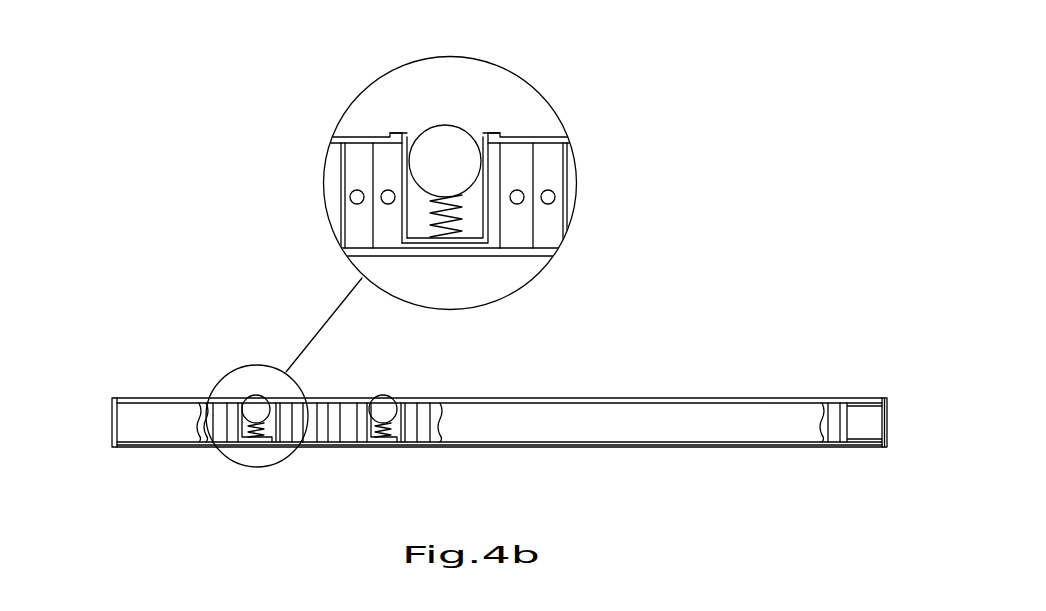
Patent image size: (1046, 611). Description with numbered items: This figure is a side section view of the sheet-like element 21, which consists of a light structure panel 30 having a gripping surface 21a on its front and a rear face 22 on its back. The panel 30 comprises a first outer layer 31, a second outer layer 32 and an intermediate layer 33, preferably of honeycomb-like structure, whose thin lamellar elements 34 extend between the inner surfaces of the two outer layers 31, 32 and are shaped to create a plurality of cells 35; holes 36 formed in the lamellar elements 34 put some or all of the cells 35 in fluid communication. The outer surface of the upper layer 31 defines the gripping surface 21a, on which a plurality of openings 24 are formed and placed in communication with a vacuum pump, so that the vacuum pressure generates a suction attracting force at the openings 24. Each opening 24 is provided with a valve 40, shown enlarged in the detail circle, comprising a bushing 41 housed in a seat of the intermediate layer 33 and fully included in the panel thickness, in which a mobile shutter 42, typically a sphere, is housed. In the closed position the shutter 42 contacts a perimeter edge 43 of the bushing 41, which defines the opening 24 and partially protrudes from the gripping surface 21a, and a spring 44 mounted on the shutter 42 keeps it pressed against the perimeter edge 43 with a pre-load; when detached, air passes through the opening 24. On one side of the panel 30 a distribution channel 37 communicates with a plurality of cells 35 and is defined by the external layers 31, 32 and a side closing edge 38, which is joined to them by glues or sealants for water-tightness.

The sheet-like element 21 is at (116, 320).
The gripping surface 21a is at (768, 388).
The rear face 22 is at (178, 458).
The opening 24 is at (410, 125).
The light structure panel 30 is at (671, 458).
The first outer layer 31 is at (350, 140).
The second outer layer 32 is at (550, 250).
The intermediate layer 33 is at (578, 194).
The lamellar element 34 is at (533, 167).
The cell 35 is at (350, 222).
The hole 36 is at (352, 192).
The distribution channel 37 is at (865, 418).
The side closing edge 38 is at (887, 415).
The valve 40 is at (240, 381).
The bushing 41 is at (404, 153).
The mobile shutter 42 is at (447, 143).
The perimeter edge 43 is at (475, 126).
The spring 44 is at (452, 228).